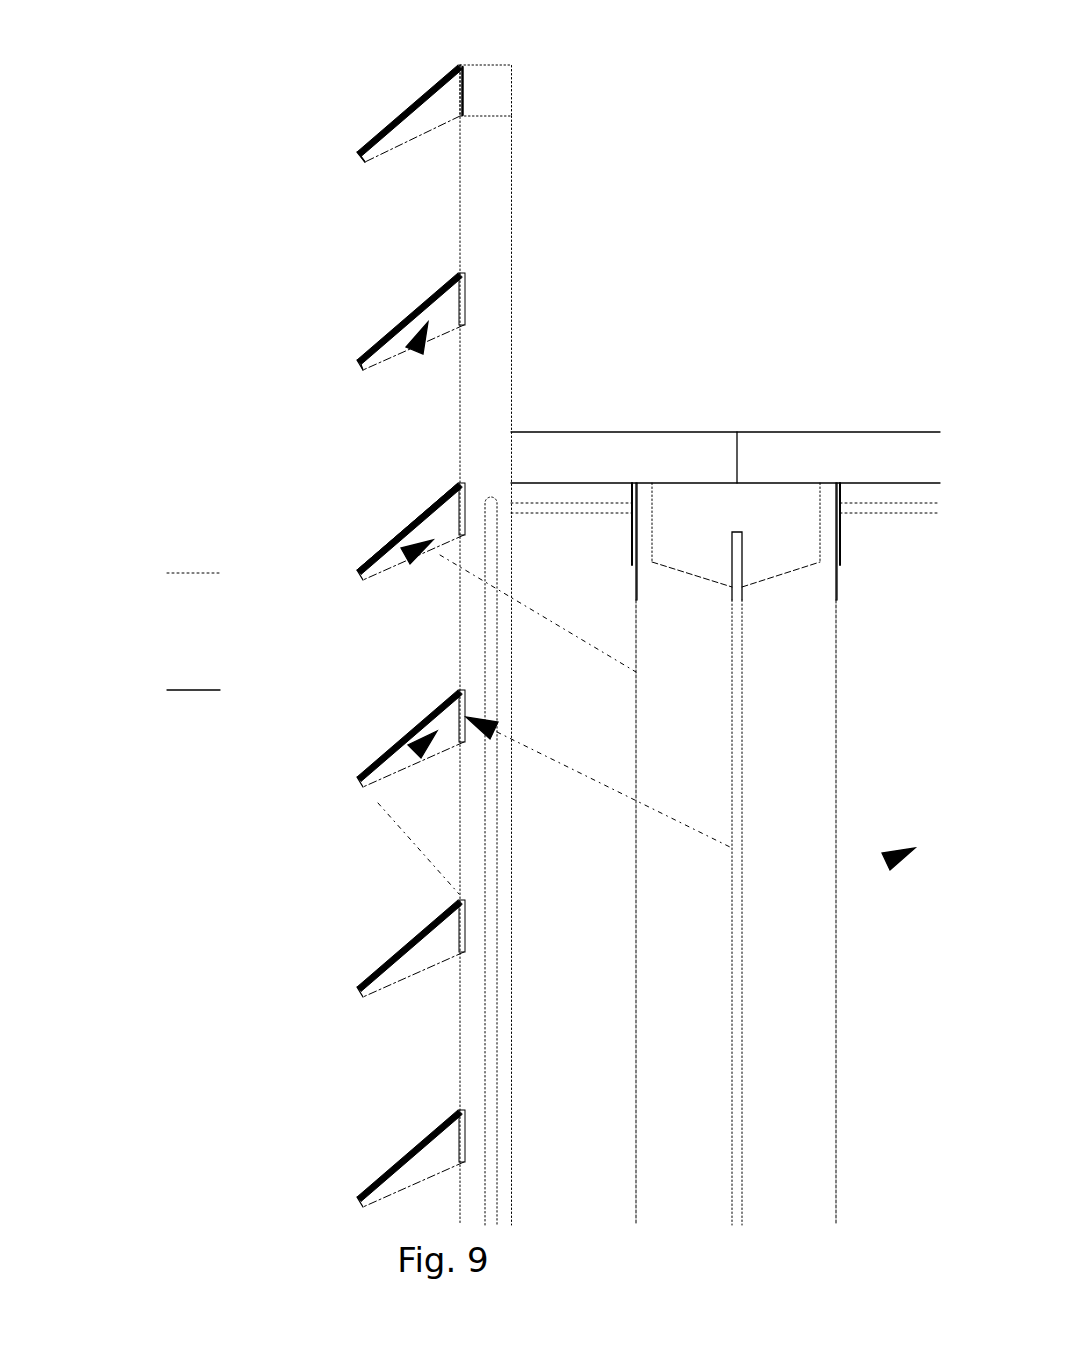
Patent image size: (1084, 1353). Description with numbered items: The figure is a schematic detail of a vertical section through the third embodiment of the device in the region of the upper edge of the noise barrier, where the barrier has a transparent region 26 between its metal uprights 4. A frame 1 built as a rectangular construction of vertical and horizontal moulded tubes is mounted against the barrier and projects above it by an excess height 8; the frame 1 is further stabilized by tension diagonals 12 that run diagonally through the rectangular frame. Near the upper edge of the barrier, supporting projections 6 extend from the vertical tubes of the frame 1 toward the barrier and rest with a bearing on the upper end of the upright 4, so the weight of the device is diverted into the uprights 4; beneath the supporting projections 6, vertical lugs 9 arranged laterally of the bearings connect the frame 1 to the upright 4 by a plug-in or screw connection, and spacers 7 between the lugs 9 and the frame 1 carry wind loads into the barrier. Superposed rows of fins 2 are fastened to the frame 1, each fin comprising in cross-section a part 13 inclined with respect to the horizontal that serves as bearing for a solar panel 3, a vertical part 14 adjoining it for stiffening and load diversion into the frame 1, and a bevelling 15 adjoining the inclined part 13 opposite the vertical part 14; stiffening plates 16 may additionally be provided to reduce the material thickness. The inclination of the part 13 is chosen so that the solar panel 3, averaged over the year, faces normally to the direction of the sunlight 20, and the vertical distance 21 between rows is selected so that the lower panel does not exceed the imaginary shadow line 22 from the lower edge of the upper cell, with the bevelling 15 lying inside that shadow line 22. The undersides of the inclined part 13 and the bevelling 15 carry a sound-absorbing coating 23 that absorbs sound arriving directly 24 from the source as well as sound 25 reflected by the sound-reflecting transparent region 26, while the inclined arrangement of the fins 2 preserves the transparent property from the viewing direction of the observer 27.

The frame 1 is at (512, 226).
The fins 2 is at (358, 160).
The solar panels 3 is at (403, 113).
The upright 4 is at (830, 497).
The supporting projections 6 is at (634, 480).
The spacers 7 is at (592, 505).
The excess height 8 is at (895, 483).
The lugs 9 is at (637, 533).
The tension diagonals 12 is at (493, 551).
The inclined part 13 is at (393, 342).
The vertical part 14 is at (467, 300).
The bevelling 15 is at (356, 366).
The stiffening plates 16 is at (437, 340).
The direction of the sunlight 20 is at (378, 545).
The vertical distance 21 is at (184, 573).
The shadow line 22 is at (411, 845).
The sound-absorbing coating 23 is at (440, 520).
The directly incoming sound 24 is at (428, 322).
The indirectly incoming sound 25 is at (636, 672).
The transparent region 26 is at (739, 715).
The observer 27 is at (915, 848).